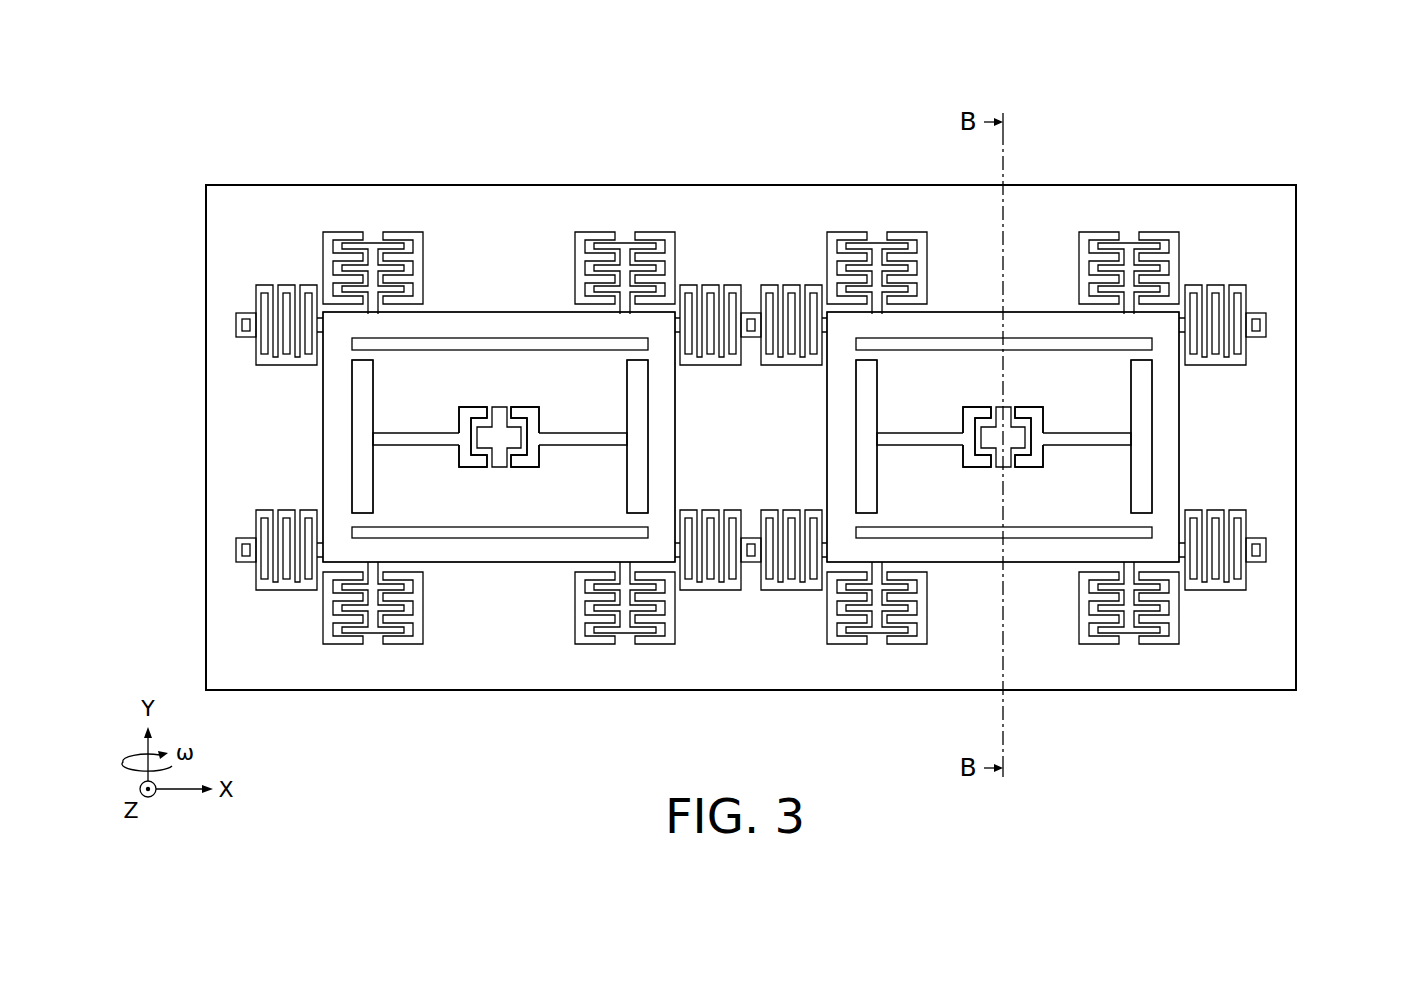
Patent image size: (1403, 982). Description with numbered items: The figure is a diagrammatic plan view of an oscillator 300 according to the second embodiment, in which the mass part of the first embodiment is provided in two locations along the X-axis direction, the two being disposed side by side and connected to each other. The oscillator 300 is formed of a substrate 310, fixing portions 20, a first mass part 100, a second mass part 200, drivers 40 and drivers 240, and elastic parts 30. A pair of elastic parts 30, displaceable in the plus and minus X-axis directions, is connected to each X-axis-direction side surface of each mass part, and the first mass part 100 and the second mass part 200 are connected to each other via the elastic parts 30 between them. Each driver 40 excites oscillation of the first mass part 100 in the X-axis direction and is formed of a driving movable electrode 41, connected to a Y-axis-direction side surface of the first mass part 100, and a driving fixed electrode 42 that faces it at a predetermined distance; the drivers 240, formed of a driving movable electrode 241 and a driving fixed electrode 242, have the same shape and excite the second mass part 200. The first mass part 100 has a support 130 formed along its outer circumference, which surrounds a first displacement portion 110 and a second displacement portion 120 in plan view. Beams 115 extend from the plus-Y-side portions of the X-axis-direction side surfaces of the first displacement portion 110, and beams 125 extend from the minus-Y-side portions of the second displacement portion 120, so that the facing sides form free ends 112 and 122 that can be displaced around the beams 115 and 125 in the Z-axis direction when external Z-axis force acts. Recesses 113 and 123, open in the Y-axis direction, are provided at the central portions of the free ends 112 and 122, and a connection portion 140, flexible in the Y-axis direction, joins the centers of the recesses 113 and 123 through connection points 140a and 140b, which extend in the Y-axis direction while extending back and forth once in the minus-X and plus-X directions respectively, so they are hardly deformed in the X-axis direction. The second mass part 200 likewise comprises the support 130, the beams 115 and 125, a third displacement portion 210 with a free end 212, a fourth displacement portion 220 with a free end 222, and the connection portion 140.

The oscillator 300 is at (1214, 102).
The substrate 310 is at (1240, 202).
The first mass part 100 is at (490, 306).
The second mass part 200 is at (1003, 396).
The first displacement portion 110 is at (455, 355).
The third displacement portion 210 is at (1004, 306).
The second displacement portion 120 is at (437, 515).
The fourth displacement portion 220 is at (1004, 628).
The support 130 is at (528, 318).
The free end 112 is at (376, 437).
The free end 212 is at (862, 432).
The recess 113 is at (455, 463).
The beams 115 is at (707, 383).
The free end 122 is at (612, 440).
The free end 222 is at (1146, 440).
The recess 123 is at (517, 415).
The beams 125 is at (707, 490).
The connection portion 140 is at (450, 625).
The connection point 140a is at (475, 467).
The connection point 140b is at (510, 467).
The fixing portions 20 is at (238, 325).
The elastic parts 30 is at (250, 290).
The drivers 40 is at (494, 395).
The driving movable electrode 41 is at (377, 240).
The driving fixed electrode 42 is at (335, 232).
The drivers 240 is at (990, 395).
The driving movable electrode 241 is at (880, 240).
The driving fixed electrode 242 is at (838, 232).